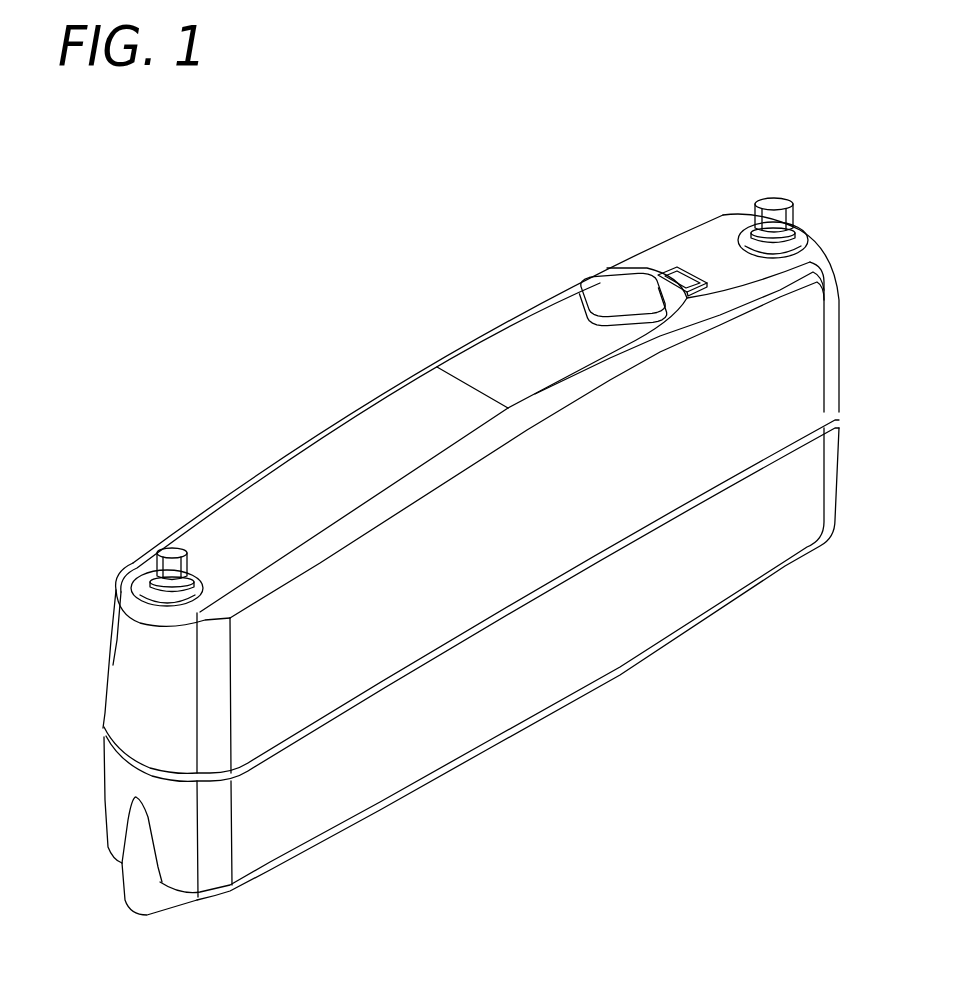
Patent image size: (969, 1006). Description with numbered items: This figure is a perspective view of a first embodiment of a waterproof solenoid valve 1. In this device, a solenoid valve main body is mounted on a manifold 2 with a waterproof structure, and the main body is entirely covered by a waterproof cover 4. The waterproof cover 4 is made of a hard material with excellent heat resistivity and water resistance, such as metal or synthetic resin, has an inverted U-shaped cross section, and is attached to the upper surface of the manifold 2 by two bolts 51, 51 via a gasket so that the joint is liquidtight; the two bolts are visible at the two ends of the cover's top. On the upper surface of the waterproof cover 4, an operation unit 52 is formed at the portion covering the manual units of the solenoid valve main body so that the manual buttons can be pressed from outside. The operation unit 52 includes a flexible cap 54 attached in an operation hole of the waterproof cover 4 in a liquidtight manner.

The waterproof solenoid valve 1 is at (471, 511).
The manifold 2 is at (570, 675).
The waterproof cover 4 is at (328, 462).
The bolt 51 is at (775, 214).
The operation unit 52 is at (599, 268).
The cap 54 is at (644, 269).